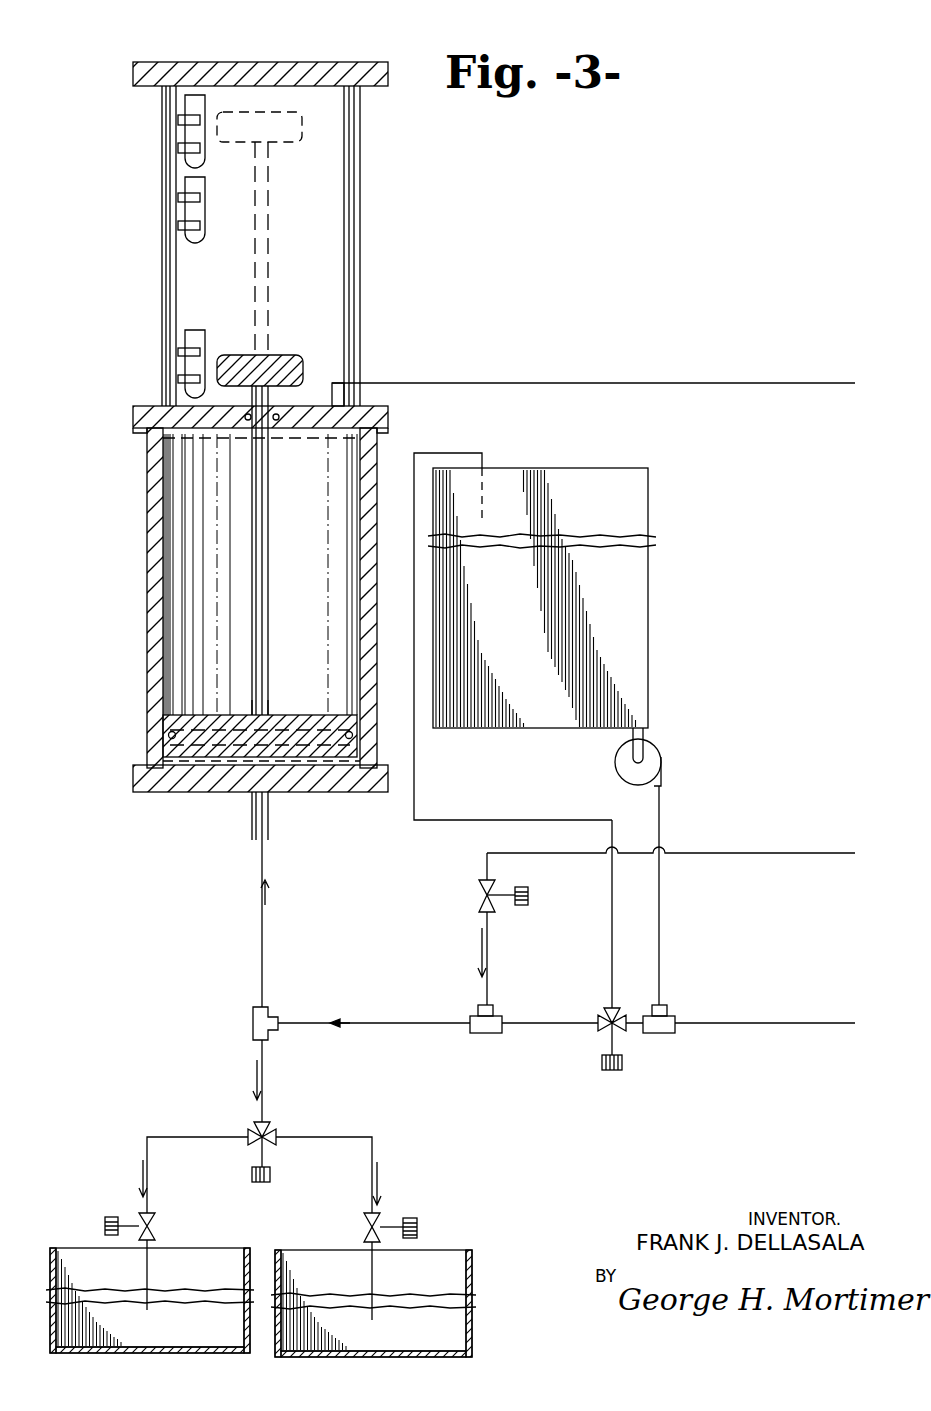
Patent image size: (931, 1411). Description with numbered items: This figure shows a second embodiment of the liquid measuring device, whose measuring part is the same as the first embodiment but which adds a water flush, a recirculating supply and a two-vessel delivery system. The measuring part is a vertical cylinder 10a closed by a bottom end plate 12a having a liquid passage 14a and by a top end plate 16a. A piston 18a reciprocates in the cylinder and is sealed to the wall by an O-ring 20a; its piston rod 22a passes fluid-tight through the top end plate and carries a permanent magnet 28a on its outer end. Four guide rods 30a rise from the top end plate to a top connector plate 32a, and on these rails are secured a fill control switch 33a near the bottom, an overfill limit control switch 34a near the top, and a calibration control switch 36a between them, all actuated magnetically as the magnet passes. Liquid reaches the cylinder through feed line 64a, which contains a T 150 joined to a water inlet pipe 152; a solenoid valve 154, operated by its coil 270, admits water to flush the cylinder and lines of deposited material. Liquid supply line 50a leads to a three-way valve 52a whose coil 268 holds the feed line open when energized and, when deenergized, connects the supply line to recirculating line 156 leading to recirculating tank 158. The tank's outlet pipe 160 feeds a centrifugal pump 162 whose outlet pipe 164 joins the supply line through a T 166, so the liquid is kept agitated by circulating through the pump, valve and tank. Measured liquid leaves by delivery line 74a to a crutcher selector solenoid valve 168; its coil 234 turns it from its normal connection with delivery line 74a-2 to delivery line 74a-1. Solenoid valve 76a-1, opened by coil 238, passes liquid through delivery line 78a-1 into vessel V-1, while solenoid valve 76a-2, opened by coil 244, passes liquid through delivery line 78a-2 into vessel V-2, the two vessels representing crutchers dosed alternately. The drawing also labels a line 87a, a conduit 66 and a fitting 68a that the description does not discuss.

The top connector plate 32a is at (388, 86).
The guide rods 30a is at (162, 258).
The overfill limit control switch 34a is at (185, 132).
The calibration control switch 36a is at (185, 207).
The fill control switch 33a is at (187, 343).
The permanent magnet 28a is at (280, 355).
The control line 87a is at (580, 383).
The top end plate 16a is at (160, 406).
The cylinder 10a is at (360, 520).
The piston rod 22a is at (270, 596).
The piston 18a is at (270, 705).
The O-ring 20a is at (345, 715).
The bottom end plate 12a is at (300, 792).
The liquid passage 14a is at (258, 842).
The conduit 66 is at (262, 950).
The liquid feed line 64a is at (278, 1017).
The conduit 68a is at (268, 1040).
The liquid supply line 50a is at (795, 1023).
The T 150 is at (478, 1033).
The water inlet pipe 152 is at (795, 853).
The solenoid valve 154 is at (492, 897).
The coil of solenoid valve 270 is at (528, 890).
The three-way valve 52a is at (605, 1028).
The coil of solenoid valve 268 is at (622, 1062).
The T 166 is at (670, 1010).
The outlet pipe 164 is at (660, 912).
The recirculating line 156 is at (414, 790).
The recirculating tank 158 is at (650, 620).
The outlet pipe 160 is at (648, 735).
The pump 162 is at (662, 765).
The delivery line 74a is at (265, 1118).
The crutcher selector solenoid valve 168 is at (250, 1128).
The coil of solenoid valve 234 is at (270, 1180).
The delivery line 74a-1 is at (163, 1140).
The delivery line 74a-2 is at (343, 1140).
The solenoid valve 76a-1 is at (155, 1226).
The coil of solenoid valve 238 is at (116, 1216).
The delivery line 78a-1 is at (150, 1278).
The vessel V-1 is at (70, 1252).
The solenoid valve 76a-2 is at (364, 1227).
The coil of solenoid valve 244 is at (410, 1217).
The delivery line 78a-2 is at (375, 1278).
The vessel V-2 is at (455, 1252).